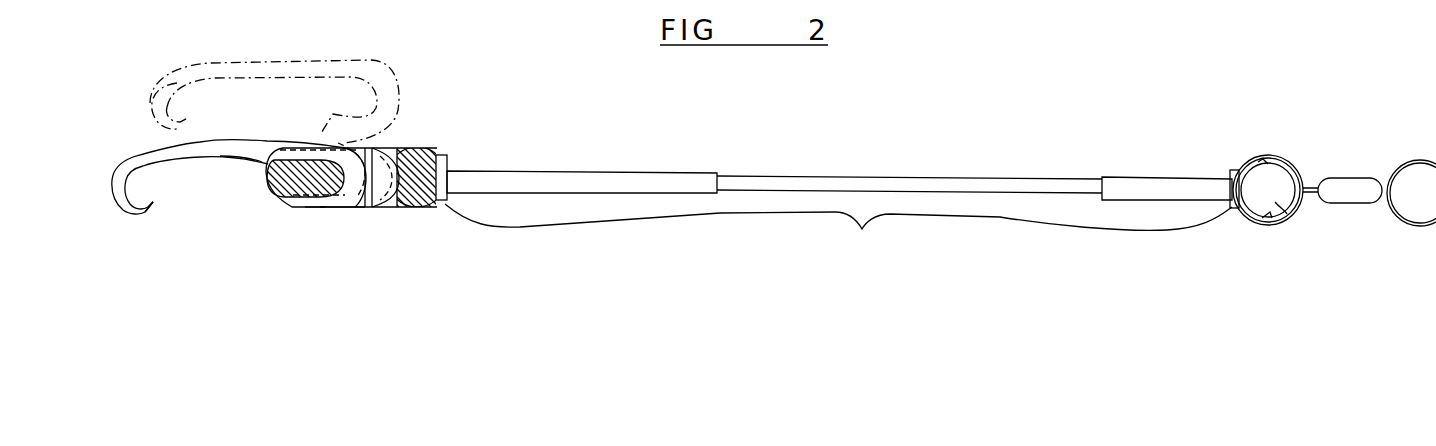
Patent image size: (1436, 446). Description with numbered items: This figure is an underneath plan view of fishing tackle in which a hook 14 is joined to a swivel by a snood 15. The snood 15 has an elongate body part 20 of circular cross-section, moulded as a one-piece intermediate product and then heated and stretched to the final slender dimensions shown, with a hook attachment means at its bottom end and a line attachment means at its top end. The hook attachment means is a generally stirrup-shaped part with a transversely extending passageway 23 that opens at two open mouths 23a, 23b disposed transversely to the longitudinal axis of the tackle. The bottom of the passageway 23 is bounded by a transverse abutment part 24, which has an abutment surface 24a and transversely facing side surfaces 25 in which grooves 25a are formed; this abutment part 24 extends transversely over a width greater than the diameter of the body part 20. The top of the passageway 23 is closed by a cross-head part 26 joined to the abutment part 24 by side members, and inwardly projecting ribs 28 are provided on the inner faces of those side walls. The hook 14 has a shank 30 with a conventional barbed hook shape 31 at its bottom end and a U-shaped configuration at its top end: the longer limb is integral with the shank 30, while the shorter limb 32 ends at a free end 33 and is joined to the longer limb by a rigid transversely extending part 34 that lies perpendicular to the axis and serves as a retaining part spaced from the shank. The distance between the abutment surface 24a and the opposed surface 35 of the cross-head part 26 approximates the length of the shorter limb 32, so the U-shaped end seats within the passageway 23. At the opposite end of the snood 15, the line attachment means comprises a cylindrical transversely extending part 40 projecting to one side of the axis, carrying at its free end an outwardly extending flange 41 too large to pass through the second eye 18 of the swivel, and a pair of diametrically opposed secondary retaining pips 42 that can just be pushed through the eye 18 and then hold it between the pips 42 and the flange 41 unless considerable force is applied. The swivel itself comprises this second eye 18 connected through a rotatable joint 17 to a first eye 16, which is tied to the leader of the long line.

The hook 14 is at (155, 155).
The snood 15 is at (873, 176).
The first eye 16 is at (1422, 163).
The rotatable joint 17 is at (1340, 178).
The second eye 18 is at (1283, 158).
The body part 20 is at (838, 231).
The passageway 23 is at (395, 148).
The open mouth 23a is at (393, 148).
The open mouth 23b is at (390, 212).
The transverse abutment part 24 is at (267, 165).
The abutment surface 24a is at (350, 218).
The side surfaces 25 is at (273, 143).
The grooves 25a is at (300, 140).
The cross-head part 26 is at (417, 209).
The inwardly projecting ribs 28 is at (380, 214).
The shank 30 is at (250, 160).
The barbed hook shape 31 is at (143, 212).
The shorter limb 32 is at (322, 212).
The free end 33 is at (317, 212).
The transversely extending part 34 is at (387, 148).
The opposed surface 35 is at (383, 212).
The transversely extending part 40 is at (1280, 223).
The flange 41 is at (1296, 168).
The secondary retaining pips 42 is at (1264, 158).